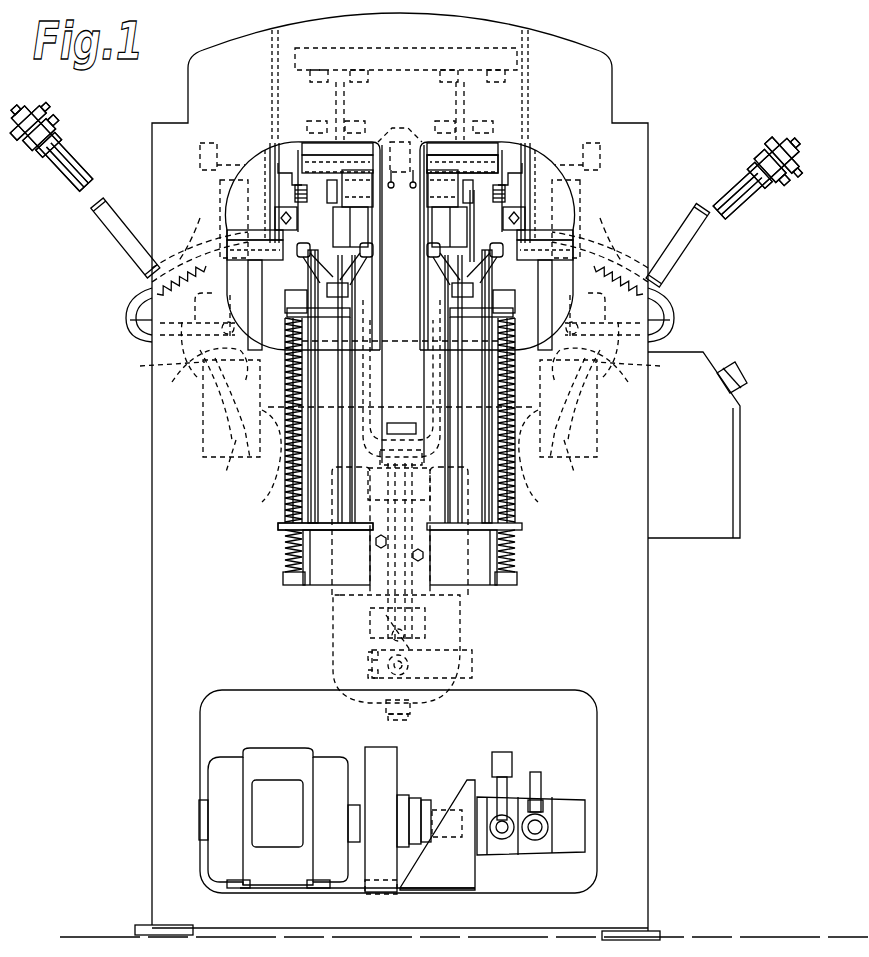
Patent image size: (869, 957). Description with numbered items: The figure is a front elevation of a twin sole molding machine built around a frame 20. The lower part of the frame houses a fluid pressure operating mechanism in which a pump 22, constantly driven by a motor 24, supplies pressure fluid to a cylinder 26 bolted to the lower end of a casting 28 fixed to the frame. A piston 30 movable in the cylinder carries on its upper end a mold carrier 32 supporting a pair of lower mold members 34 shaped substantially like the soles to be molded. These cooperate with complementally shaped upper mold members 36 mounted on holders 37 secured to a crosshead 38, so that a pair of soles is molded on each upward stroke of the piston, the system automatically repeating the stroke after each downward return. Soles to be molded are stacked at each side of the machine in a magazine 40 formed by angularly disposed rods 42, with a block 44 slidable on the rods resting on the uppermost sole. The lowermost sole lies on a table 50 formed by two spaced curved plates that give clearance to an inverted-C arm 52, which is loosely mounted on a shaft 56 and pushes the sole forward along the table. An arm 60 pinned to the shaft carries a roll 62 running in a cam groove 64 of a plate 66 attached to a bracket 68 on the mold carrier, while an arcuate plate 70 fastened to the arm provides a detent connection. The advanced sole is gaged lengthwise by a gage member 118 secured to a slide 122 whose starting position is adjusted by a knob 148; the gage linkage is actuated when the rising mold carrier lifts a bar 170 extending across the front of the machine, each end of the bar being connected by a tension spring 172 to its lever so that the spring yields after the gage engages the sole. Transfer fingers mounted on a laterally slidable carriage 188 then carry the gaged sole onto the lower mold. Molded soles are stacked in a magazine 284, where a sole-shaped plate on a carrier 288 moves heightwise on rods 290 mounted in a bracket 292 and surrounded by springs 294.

The frame 20 is at (640, 746).
The pump 22 is at (568, 813).
The motor 24 is at (220, 770).
The cylinder 26 is at (455, 620).
The casting 28 is at (478, 665).
The piston 30 is at (412, 585).
The mold carrier 32 is at (402, 345).
The lower mold members 34 is at (300, 292).
The upper mold members 36 is at (300, 142).
The holders 37 is at (400, 148).
The crosshead 38 is at (412, 62).
The magazine 40 is at (107, 152).
The rods 42 is at (72, 178).
The block 44 is at (33, 138).
The table 50 is at (675, 200).
The arm 52 is at (133, 322).
The shaft 56 is at (228, 320).
The arm 60 is at (200, 376).
The roll 62 is at (610, 410).
The cam groove 64 is at (210, 432).
The plate 66 is at (228, 462).
The bracket 68 is at (273, 442).
The arcuate plate 70 is at (160, 366).
The gage member 118 is at (262, 190).
The slide 122 is at (580, 197).
The knob 148 is at (510, 227).
The bar 170 is at (512, 168).
The tension spring 172 is at (300, 168).
The carriage 188 is at (225, 184).
The magazine 284 is at (268, 505).
The carrier 288 is at (256, 268).
The rods 290 is at (296, 575).
The bracket 292 is at (315, 592).
The springs 294 is at (290, 545).